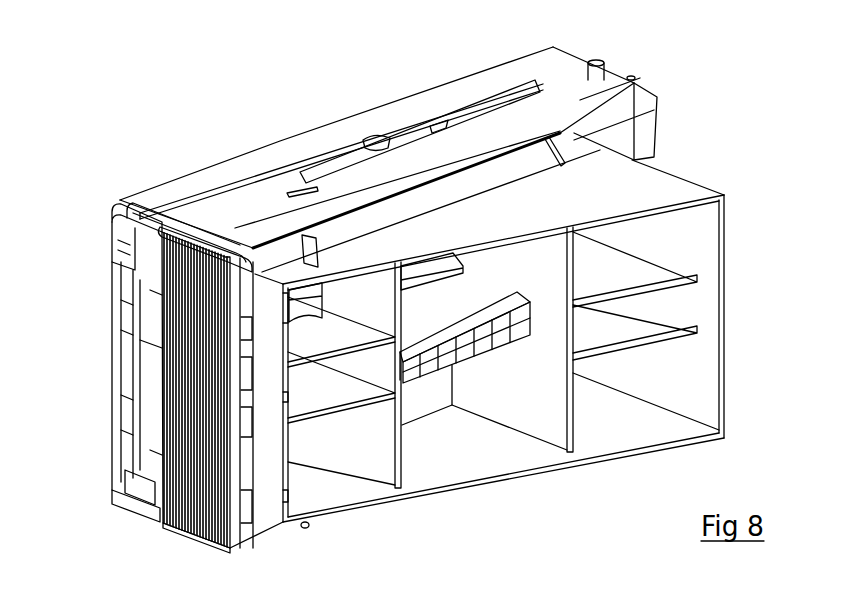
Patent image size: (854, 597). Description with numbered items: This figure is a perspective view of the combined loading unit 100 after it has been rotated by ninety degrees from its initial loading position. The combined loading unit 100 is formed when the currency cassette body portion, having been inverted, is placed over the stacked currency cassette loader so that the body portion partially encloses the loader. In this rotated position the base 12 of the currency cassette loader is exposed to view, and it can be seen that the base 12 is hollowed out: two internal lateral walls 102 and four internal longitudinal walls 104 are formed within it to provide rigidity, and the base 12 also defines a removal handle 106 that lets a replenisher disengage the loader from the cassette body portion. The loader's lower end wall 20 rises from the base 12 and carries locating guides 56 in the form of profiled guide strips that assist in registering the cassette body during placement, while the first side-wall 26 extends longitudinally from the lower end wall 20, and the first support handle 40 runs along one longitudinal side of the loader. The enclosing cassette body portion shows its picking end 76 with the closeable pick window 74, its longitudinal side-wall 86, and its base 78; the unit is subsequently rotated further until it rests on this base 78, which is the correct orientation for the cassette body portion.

The combined loading unit 100 is at (87, 15).
The picking end 76 is at (265, 0).
The longitudinal side-wall 86 is at (557, 84).
The locating guides 56 is at (268, 300).
The base 78 is at (113, 262).
The closeable pick window 74 is at (140, 342).
The lower end wall 20 is at (150, 425).
The first support handle 40 is at (410, 203).
The first side-wall 26 is at (666, 197).
The base 12 is at (725, 383).
The internal lateral walls 102 is at (538, 425).
The internal longitudinal walls 104 is at (370, 397).
The removal handle 106 is at (475, 357).